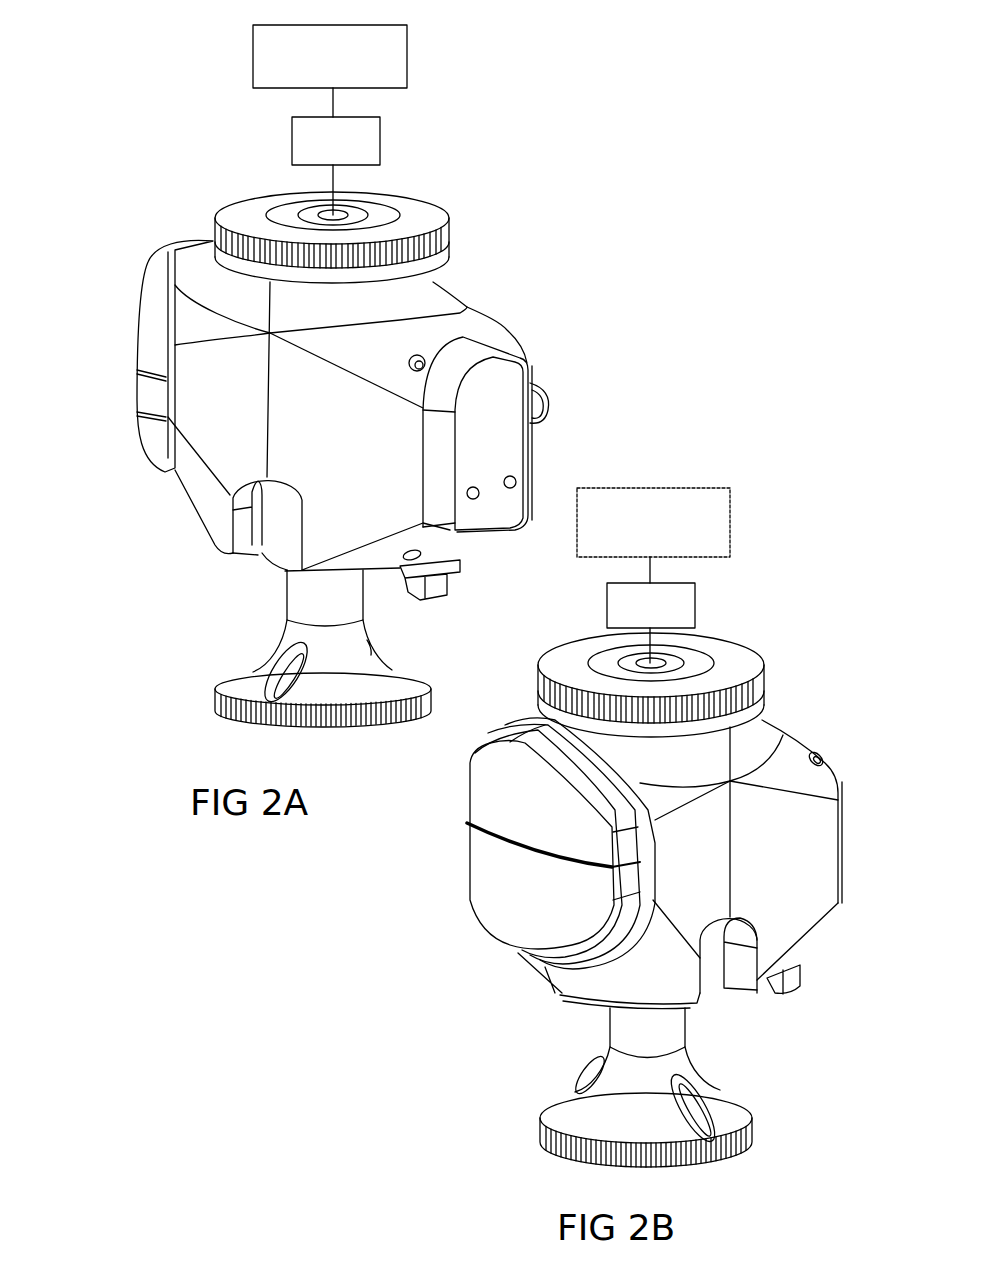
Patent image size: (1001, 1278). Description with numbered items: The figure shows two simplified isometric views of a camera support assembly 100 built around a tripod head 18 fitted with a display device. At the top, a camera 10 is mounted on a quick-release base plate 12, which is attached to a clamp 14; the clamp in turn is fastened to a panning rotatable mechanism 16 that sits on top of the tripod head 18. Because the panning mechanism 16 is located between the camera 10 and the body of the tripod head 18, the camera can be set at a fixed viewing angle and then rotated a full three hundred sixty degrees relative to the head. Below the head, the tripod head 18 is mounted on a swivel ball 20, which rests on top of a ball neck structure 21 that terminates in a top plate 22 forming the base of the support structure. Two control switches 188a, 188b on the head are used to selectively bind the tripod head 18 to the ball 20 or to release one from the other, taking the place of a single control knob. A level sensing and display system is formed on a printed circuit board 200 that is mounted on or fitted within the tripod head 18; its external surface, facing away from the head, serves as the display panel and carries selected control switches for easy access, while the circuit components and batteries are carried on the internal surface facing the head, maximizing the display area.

In FIG. 2A, the camera 10 is at (407, 62).
In FIG. 2B, the camera 10 is at (732, 520).
In FIG. 2A, the base plate 12 is at (394, 151).
In FIG. 2B, the base plate 12 is at (709, 610).
In FIG. 2A, the clamp 14 is at (380, 140).
In FIG. 2B, the clamp 14 is at (695, 606).
In FIG. 2A, the panning rotatable mechanism 16 is at (447, 247).
In FIG. 2B, the panning rotatable mechanism 16 is at (763, 692).
In FIG. 2A, the tripod head 18 is at (210, 477).
In FIG. 2B, the tripod head 18 is at (787, 910).
In FIG. 2A, the ball 20 is at (275, 565).
In FIG. 2B, the ball 20 is at (713, 987).
In FIG. 2A, the ball neck structure 21 is at (283, 603).
In FIG. 2B, the ball neck structure 21 is at (630, 1038).
In FIG. 2A, the top plate 22 is at (213, 700).
In FIG. 2B, the top plate 22 is at (547, 1147).
In FIG. 2A, the camera support assembly 100 is at (592, 283).
In FIG. 2B, the camera support assembly 100 is at (868, 590).
In FIG. 2A, the printed circuit board 200 is at (510, 437).
In FIG. 2B, the printed circuit board 200 is at (840, 855).
In FIG. 2B, the control switch 188a is at (497, 803).
In FIG. 2B, the control switch 188b is at (500, 908).